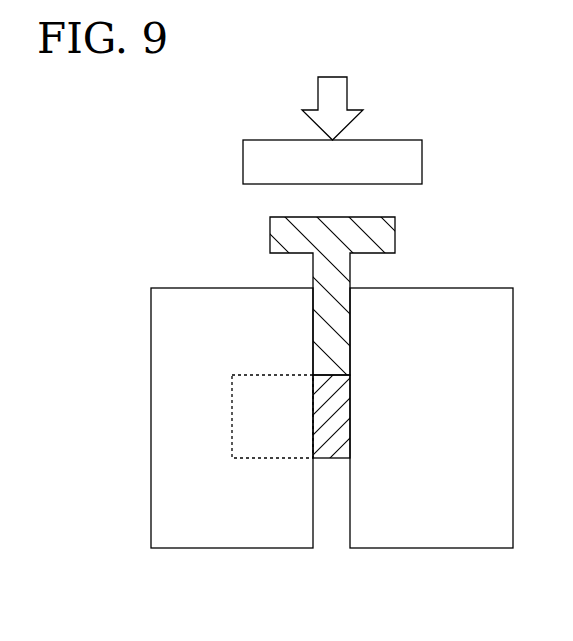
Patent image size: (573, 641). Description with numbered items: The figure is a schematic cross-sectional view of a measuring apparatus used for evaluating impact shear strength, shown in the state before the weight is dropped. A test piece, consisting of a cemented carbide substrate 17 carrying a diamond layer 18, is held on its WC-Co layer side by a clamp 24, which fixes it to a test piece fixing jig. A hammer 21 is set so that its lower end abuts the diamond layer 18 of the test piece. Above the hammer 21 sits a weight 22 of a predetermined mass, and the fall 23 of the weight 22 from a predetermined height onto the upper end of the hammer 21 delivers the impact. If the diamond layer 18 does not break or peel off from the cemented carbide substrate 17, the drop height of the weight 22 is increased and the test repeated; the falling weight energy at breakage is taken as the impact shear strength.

The cemented carbide substrate 17 is at (265, 421).
The diamond layer 18 is at (336, 438).
The hammer 21 is at (377, 235).
The weight 22 is at (480, 160).
The fall 23 is at (333, 93).
The clamp 24 is at (233, 530).